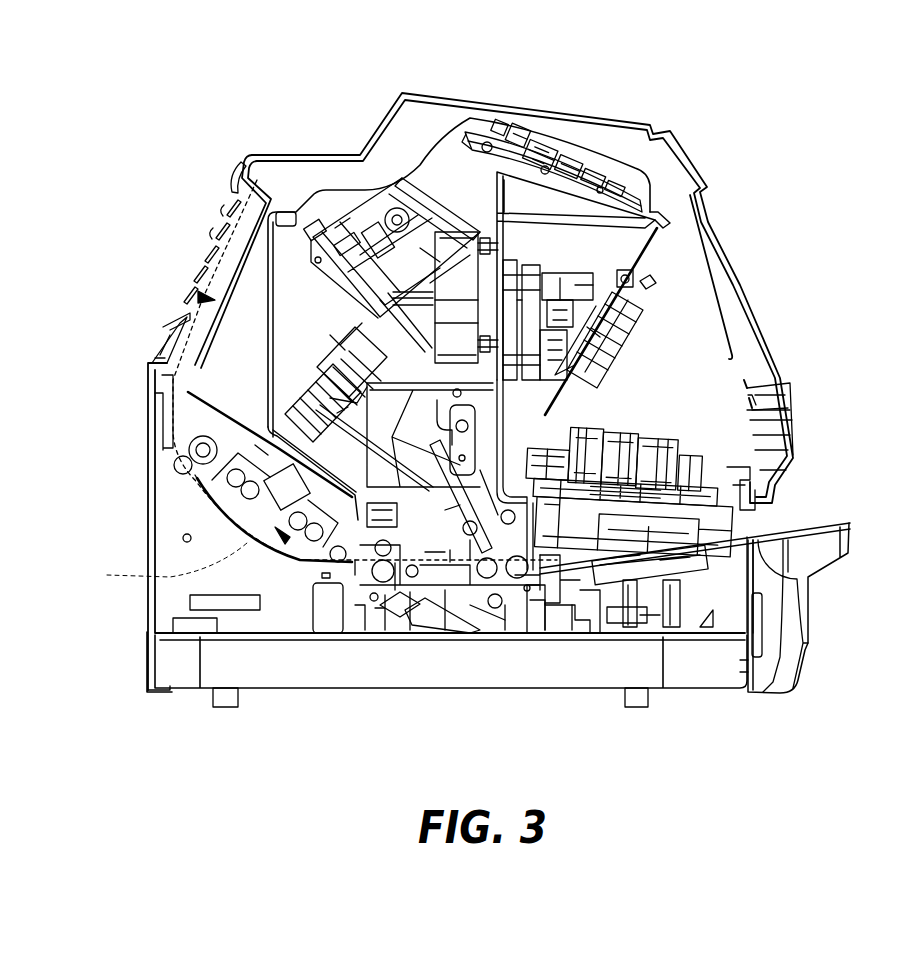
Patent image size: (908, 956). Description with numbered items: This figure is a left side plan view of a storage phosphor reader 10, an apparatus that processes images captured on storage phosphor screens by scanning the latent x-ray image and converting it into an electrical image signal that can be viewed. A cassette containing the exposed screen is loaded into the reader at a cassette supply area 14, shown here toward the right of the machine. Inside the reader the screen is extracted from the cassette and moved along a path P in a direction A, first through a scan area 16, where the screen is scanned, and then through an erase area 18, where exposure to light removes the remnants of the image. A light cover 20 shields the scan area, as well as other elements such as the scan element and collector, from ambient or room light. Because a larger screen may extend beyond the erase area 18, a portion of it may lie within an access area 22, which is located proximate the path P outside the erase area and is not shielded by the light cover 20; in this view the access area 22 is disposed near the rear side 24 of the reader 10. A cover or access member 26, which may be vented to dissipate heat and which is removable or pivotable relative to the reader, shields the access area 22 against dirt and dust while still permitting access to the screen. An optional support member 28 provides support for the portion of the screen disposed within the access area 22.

The storage phosphor reader 10 is at (796, 143).
The cassette supply area 14 is at (806, 496).
The scan area 16 is at (415, 652).
The erase area 18 is at (242, 515).
The light cover 20 is at (345, 190).
The access area 22 is at (196, 293).
The rear side 24 is at (148, 435).
The cover (access member) 26 is at (227, 227).
The support member 28 is at (227, 197).
The path P is at (187, 265).
The direction A is at (290, 547).